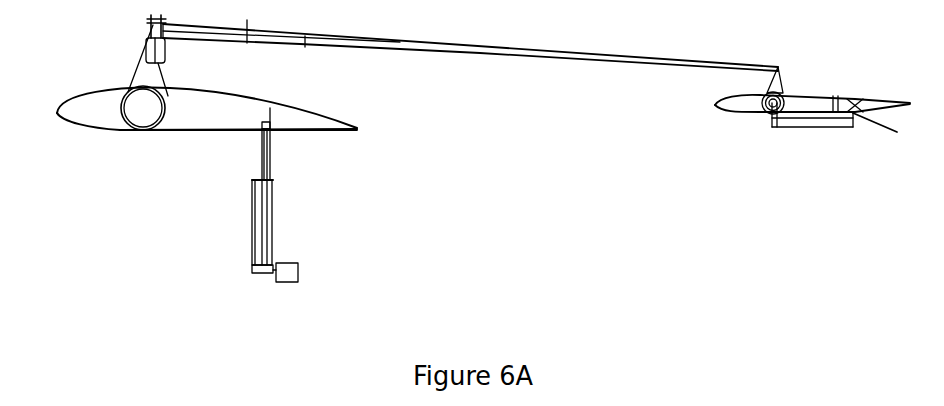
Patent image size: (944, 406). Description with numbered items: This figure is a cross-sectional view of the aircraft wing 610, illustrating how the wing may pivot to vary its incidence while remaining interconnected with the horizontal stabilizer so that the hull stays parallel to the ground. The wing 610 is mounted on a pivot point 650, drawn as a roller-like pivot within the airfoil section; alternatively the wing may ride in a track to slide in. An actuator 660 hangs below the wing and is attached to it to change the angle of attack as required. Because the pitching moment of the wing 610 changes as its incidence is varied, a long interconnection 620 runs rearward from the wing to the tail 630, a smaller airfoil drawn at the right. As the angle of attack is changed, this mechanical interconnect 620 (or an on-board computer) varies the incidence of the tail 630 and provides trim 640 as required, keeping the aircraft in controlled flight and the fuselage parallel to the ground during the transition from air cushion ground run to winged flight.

The wing 610 is at (110, 131).
The interconnection 620 is at (303, 50).
The tail 630 is at (717, 107).
The trim 640 is at (885, 127).
The pivot point 650 is at (167, 118).
The actuator 660 is at (272, 208).